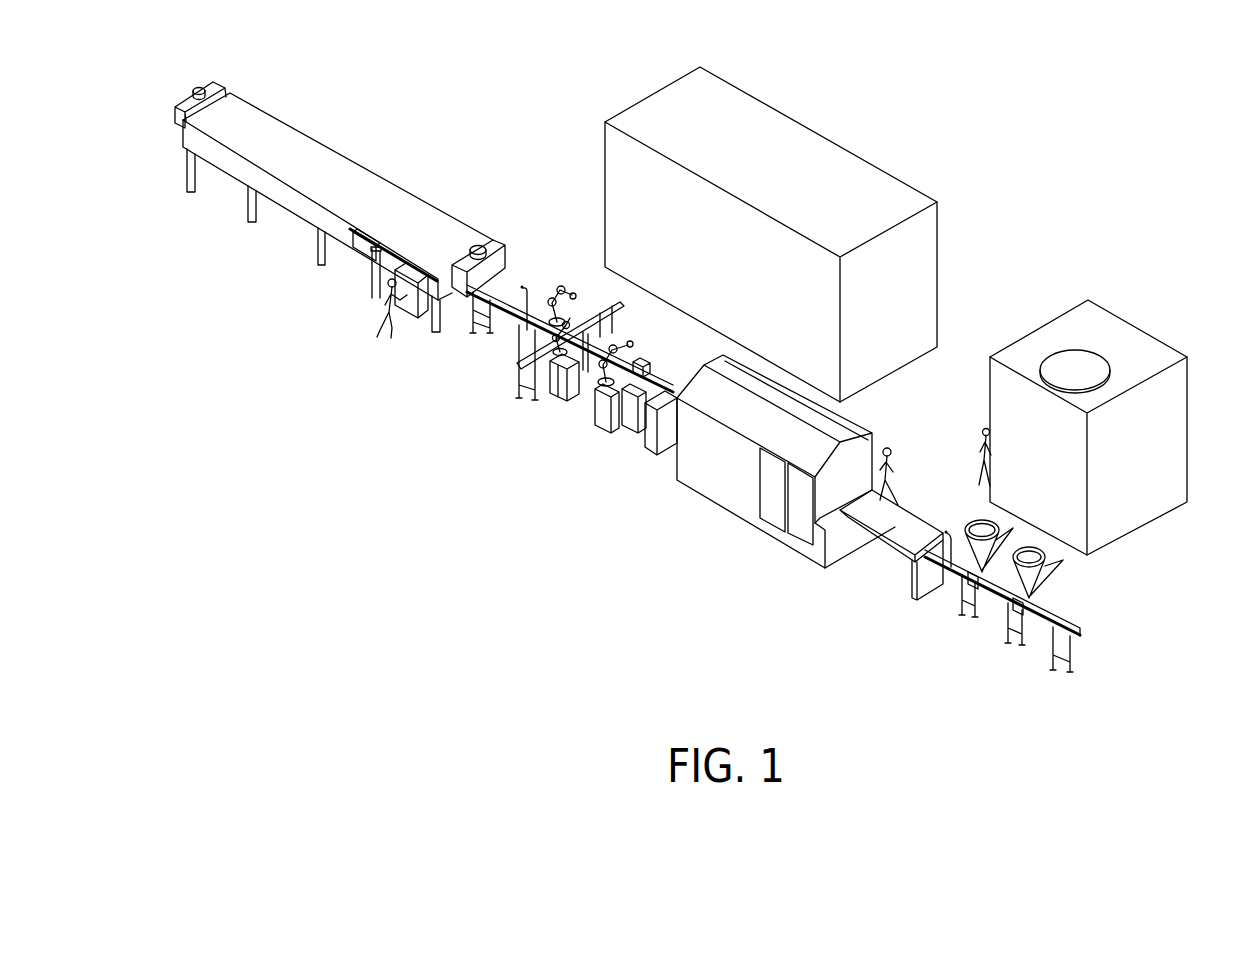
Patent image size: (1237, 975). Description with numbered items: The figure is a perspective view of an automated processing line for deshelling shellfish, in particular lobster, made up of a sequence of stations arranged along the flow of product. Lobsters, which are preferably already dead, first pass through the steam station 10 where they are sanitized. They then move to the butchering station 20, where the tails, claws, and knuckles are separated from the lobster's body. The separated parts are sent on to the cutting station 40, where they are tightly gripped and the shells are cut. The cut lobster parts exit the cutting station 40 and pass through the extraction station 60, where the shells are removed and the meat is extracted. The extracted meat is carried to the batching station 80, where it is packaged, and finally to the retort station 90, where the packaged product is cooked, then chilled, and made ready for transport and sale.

The steam station 10 is at (290, 195).
The butchering station 20 is at (565, 417).
The cutting station 40 is at (737, 503).
The extraction station 60 is at (942, 613).
The batching station 80 is at (1145, 495).
The retort station 90 is at (627, 108).